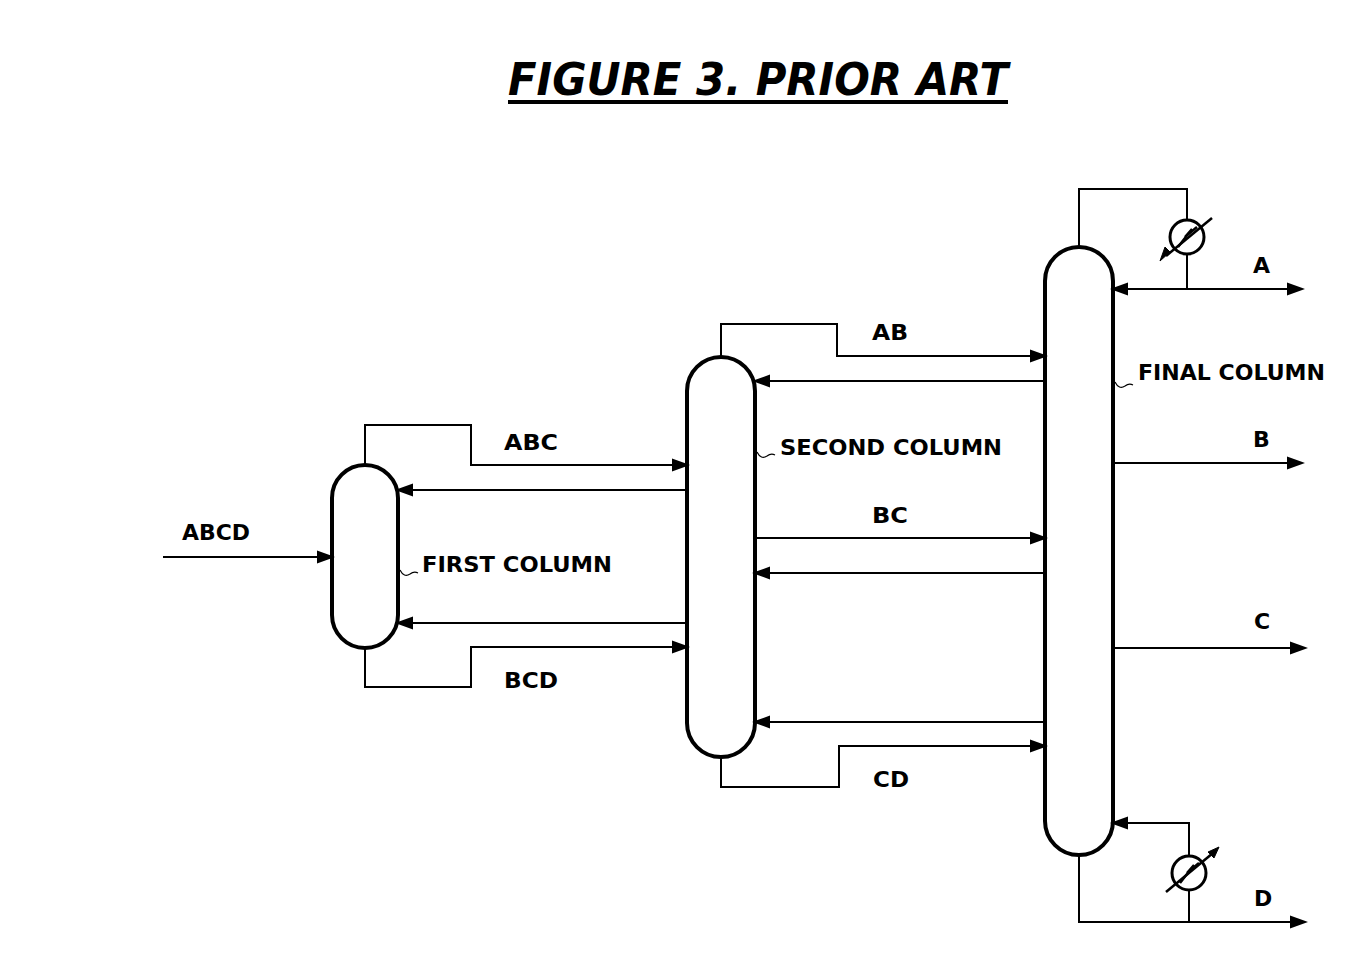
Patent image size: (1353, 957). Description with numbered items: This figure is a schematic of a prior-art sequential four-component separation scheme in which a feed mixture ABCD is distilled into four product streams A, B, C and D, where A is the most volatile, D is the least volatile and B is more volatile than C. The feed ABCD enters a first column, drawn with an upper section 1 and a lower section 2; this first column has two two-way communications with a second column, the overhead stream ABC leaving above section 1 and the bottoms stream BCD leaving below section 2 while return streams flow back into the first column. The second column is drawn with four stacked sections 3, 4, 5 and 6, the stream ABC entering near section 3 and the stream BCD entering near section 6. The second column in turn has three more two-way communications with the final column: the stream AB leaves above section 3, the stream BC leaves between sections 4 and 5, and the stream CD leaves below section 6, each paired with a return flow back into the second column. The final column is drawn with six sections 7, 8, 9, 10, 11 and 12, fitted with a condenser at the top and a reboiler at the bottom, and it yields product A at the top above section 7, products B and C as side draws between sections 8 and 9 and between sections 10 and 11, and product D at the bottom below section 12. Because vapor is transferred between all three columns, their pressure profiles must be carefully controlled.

The first column upper section 1 is at (355, 521).
The first column lower section 2 is at (355, 606).
The second column section 3 is at (712, 436).
The second column section 4 is at (712, 528).
The second column section 5 is at (712, 613).
The second column section 6 is at (712, 696).
The final column section 7 is at (1071, 336).
The final column section 8 is at (1071, 446).
The final column section 9 is at (1071, 520).
The final column section 10 is at (1067, 620).
The final column section 11 is at (1067, 694).
The final column section 12 is at (1067, 803).